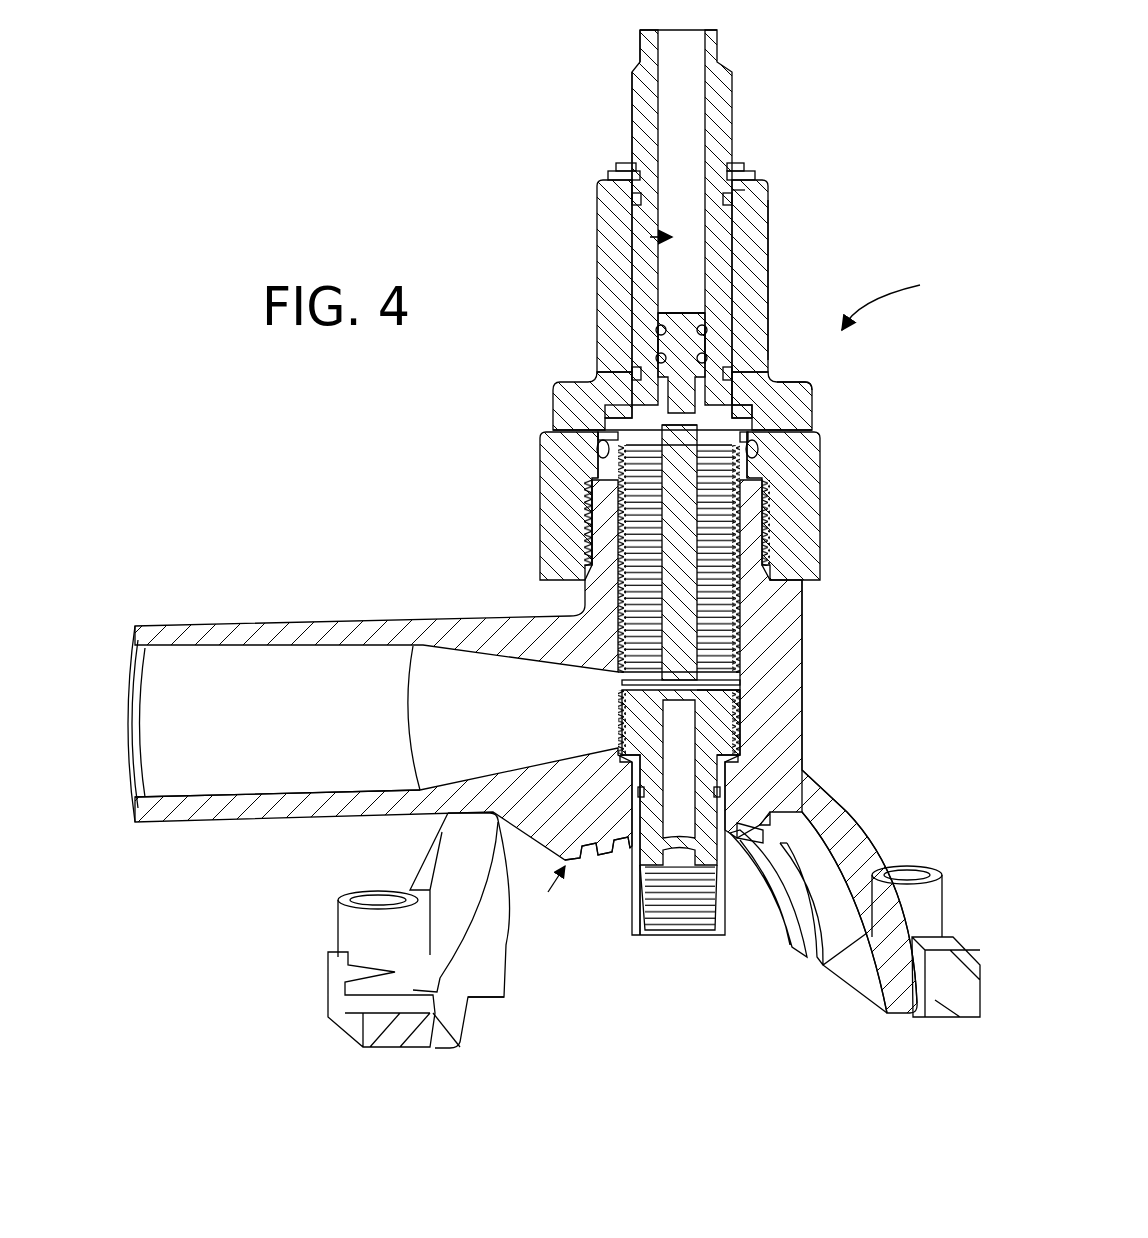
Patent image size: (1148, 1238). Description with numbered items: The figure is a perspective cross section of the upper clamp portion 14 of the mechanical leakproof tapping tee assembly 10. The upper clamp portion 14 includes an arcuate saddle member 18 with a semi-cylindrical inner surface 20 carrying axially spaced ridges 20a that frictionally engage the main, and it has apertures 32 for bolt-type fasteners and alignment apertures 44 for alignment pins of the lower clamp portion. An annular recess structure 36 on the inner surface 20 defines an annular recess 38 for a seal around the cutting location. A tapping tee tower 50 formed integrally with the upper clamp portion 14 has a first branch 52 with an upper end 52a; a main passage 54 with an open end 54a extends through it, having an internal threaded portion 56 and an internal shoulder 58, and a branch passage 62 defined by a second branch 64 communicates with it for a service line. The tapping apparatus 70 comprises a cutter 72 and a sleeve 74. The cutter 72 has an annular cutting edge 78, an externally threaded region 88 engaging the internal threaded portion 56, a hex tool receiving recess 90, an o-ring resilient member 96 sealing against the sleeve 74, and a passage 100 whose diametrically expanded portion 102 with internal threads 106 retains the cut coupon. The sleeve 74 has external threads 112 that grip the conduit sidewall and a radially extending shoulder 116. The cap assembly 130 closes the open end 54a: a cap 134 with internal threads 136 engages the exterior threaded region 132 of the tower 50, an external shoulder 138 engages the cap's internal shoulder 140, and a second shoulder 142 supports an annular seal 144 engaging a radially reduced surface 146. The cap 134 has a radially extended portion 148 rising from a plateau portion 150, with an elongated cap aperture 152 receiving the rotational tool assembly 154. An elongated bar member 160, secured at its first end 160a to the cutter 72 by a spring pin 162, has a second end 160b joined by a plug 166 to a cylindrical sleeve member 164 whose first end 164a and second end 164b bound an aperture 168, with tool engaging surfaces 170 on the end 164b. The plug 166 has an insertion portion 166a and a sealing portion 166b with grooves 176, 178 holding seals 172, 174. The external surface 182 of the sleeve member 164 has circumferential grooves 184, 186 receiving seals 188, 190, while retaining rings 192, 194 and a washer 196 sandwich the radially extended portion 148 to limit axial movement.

The tapping tee assembly 10 is at (357, 436).
The upper clamp portion 14 is at (825, 850).
The arcuate saddle member 18 is at (823, 968).
The inner surface 20 is at (500, 905).
The ridges 20a is at (790, 945).
The apertures 32 is at (375, 895).
The annular recess structure 36 is at (549, 893).
The annular recess 38 is at (600, 850).
The alignment apertures 44 is at (395, 1030).
The tapping tee tower 50 is at (805, 640).
The first branch 52 is at (790, 782).
The upper end of first branch 52a is at (600, 435).
The main passage 54 is at (745, 615).
The open end of main passage 54a is at (748, 440).
The internal threaded portion 56 is at (610, 600).
The internal shoulder 58 is at (615, 762).
The branch passage 62 is at (200, 805).
The second branch 64 is at (300, 812).
The tapping apparatus 70 is at (805, 805).
The cutter 72 is at (748, 832).
The sleeve 74 is at (640, 770).
The annular cutting edge 78 is at (640, 920).
The externally threaded region 88 is at (742, 722).
The tool receiving recess 90 is at (624, 705).
The resilient member 96 is at (820, 802).
The passage 100 is at (640, 790).
The diametrically expanded portion 102 is at (685, 910).
The internal threads 106 is at (722, 890).
The external threads 112 is at (722, 850).
The radially extending shoulder 116 is at (782, 770).
The cap assembly 130 is at (902, 300).
The exterior threaded region 132 is at (772, 520).
The cap 134 is at (795, 392).
The internal threads 136 is at (585, 530).
The external shoulder 138 is at (815, 480).
The internal shoulder 140 is at (580, 498).
The second shoulder 142 is at (600, 452).
The annular seal 144 is at (758, 452).
The radially reduced surface 146 is at (548, 460).
The radially extended portion 148 is at (760, 232).
The plateau portion 150 is at (562, 383).
The cap aperture 152 is at (597, 230).
The rotational tool assembly 154 is at (633, 240).
The elongated bar member 160 is at (740, 655).
The first end of bar member 160a is at (741, 700).
The second end of bar member 160b is at (753, 410).
The spring pin 162 is at (624, 683).
The cylindrical sleeve member 164 is at (722, 120).
The first end of sleeve member 164a is at (612, 410).
The second end of sleeve member 164b is at (717, 45).
The plug 166 is at (702, 358).
The insertion portion 166a is at (661, 358).
The sealing portion 166b is at (702, 330).
The aperture 168 is at (685, 85).
The tool engaging surfaces 170 is at (640, 42).
The seal 172 is at (688, 345).
The seal 174 is at (706, 360).
The groove 176 is at (676, 313).
The groove 178 is at (660, 332).
The external surface 182 is at (632, 92).
The circumferential groove 184 is at (732, 200).
The circumferential groove 186 is at (733, 372).
The seal 188 is at (745, 190).
The seal 190 is at (733, 380).
The retaining ring 192 is at (747, 166).
The retaining ring 194 is at (753, 445).
The washer 196 is at (755, 176).